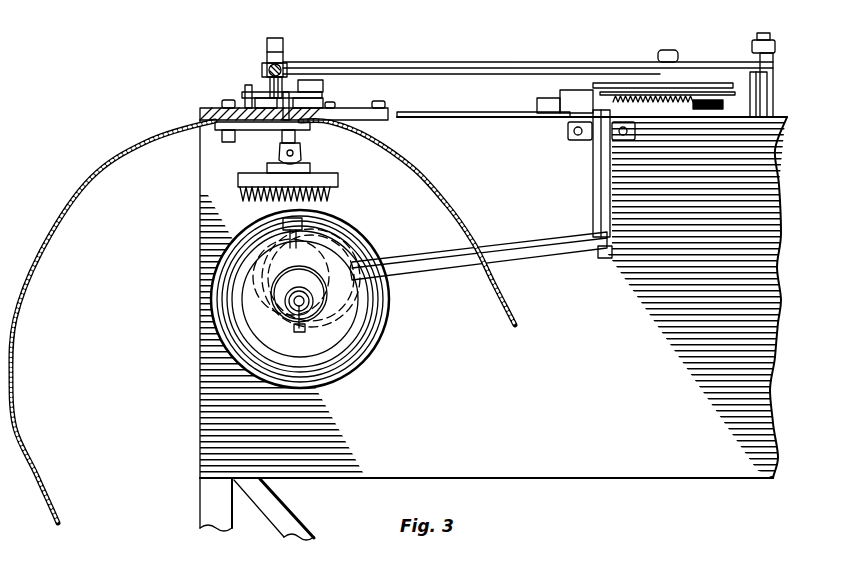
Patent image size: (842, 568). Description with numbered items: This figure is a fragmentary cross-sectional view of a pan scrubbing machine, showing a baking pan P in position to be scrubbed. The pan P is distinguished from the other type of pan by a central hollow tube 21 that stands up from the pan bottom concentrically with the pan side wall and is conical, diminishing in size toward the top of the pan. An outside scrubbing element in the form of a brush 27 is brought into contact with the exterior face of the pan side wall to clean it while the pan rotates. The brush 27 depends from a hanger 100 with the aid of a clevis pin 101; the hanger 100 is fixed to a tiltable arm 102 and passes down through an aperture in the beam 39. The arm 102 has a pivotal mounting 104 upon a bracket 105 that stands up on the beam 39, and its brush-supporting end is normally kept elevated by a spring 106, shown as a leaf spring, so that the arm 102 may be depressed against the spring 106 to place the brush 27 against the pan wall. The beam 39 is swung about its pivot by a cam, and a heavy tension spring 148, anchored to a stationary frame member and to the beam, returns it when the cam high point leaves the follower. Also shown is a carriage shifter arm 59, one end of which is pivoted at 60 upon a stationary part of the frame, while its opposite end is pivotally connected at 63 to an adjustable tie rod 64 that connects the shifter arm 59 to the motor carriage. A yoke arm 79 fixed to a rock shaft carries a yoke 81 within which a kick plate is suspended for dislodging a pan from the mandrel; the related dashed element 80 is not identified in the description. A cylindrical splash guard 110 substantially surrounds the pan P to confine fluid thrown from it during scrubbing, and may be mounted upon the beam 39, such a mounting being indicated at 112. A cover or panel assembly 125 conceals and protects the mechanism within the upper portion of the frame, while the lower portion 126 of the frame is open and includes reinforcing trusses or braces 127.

The central hollow tube 21 is at (283, 288).
The brush 27 is at (338, 193).
The beam 39 is at (218, 108).
The carriage shifter arm 59 is at (452, 62).
The pivot 60 is at (764, 40).
The pivotal connection 63 is at (284, 43).
The adjustable tie rod 64 is at (262, 70).
The yoke arm 79 is at (455, 262).
The gear 80 is at (268, 286).
The yoke 81 is at (343, 312).
The hanger 100 is at (345, 129).
The clevis pin 101 is at (298, 153).
The tiltable arm 102 is at (287, 98).
The pivotal mounting 104 is at (323, 95).
The bracket 105 is at (245, 87).
The spring 106 is at (266, 104).
The cylindrical splash guard 110 is at (96, 178).
The mounting 112 is at (214, 125).
The cover or panel assembly 125 is at (631, 470).
The lower portion of the frame 126 is at (213, 516).
The reinforcing trusses or braces 127 is at (290, 517).
The tension spring 148 is at (637, 96).
The pan P is at (380, 338).